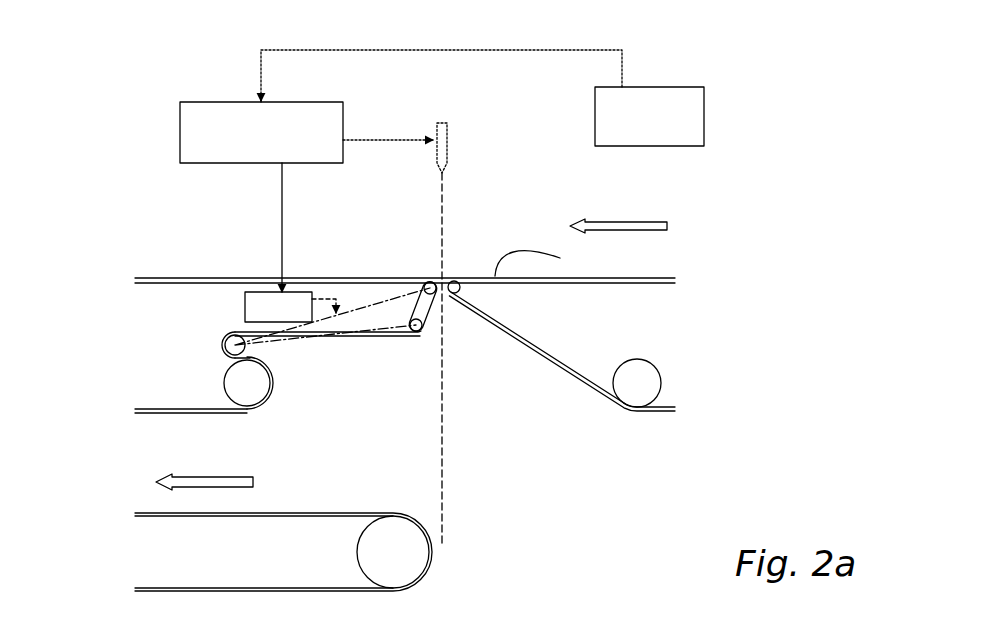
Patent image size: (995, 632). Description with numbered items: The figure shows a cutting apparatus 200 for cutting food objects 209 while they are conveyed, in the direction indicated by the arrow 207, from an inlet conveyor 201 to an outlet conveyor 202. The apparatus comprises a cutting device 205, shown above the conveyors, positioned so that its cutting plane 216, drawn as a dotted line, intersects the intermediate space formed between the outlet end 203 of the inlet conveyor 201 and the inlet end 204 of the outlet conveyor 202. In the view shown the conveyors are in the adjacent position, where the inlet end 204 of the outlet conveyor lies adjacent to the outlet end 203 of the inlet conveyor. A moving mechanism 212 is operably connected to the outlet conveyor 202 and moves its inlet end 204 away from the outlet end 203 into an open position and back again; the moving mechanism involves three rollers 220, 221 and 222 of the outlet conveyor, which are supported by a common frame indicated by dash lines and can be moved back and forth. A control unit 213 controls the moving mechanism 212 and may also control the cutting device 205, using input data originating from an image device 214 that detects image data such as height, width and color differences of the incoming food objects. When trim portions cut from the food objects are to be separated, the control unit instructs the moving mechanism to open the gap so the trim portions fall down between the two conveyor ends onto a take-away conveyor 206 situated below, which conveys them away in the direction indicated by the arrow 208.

The cutting apparatus 200 is at (185, 54).
The inlet conveyor 201 is at (640, 348).
The outlet conveyor 202 is at (188, 338).
The outlet end of the inlet conveyor 203 is at (449, 280).
The inlet end of the outlet conveyor 204 is at (434, 282).
The cutting device 205 is at (447, 137).
The take-away conveyor 206 is at (267, 570).
The arrow 207 is at (617, 220).
The arrow 208 is at (210, 477).
The food objects 209 is at (560, 258).
The moving mechanism 212 is at (245, 313).
The control unit 213 is at (180, 143).
The image device 214 is at (704, 115).
The cutting plane 216 is at (443, 347).
The roller 220 is at (246, 352).
The roller 221 is at (428, 290).
The roller 222 is at (415, 331).